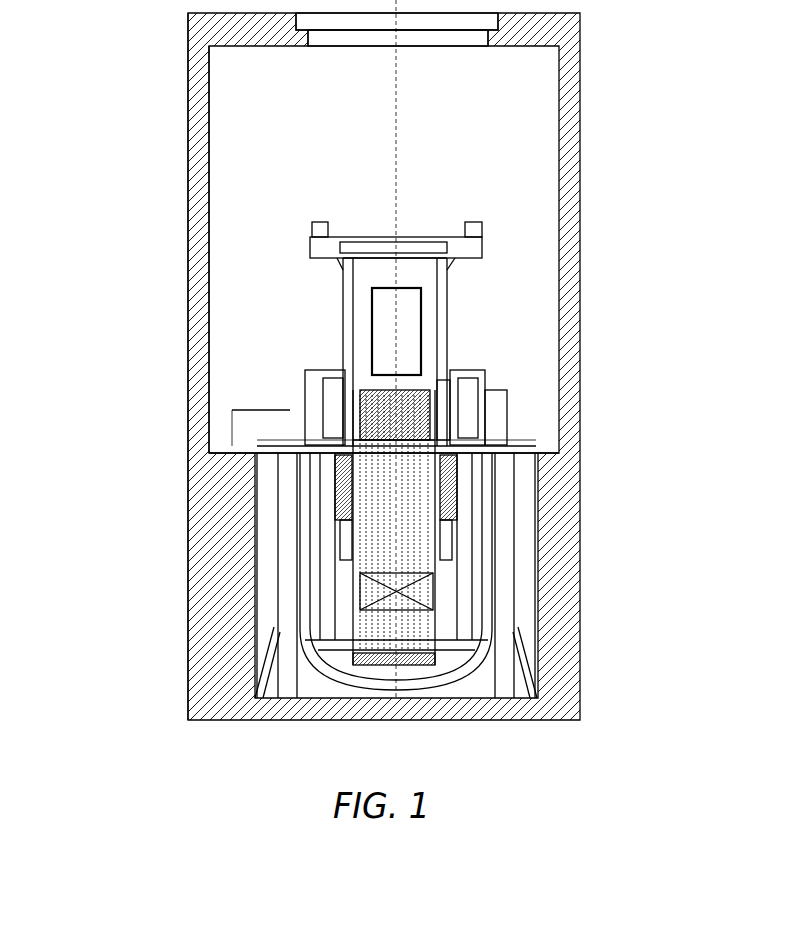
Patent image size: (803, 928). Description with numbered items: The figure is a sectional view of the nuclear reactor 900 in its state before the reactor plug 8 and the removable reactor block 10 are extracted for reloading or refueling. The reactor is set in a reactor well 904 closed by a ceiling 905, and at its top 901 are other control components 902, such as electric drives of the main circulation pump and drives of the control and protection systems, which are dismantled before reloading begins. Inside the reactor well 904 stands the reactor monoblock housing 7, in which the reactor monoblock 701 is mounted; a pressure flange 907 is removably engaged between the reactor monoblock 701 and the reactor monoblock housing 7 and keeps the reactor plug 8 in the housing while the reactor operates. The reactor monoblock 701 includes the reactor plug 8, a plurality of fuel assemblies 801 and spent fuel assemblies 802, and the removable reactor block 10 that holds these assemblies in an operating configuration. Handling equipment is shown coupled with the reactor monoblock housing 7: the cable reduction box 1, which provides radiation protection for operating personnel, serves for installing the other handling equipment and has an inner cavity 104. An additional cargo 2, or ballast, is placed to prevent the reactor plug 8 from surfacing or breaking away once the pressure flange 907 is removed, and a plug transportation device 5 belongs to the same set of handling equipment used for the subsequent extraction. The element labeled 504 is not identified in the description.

The nuclear reactor 900 is at (200, 27).
The ceiling 905 is at (272, 50).
The reactor well 904 is at (200, 232).
The top 901 is at (262, 440).
The pressure flange 907 is at (297, 433).
The cable reduction box 1 is at (343, 337).
The inner cavity 104 is at (367, 267).
The additional cargo 2 is at (398, 288).
The control components 902 is at (300, 377).
The steam generator 504 is at (428, 377).
The plug transportation device 5 is at (452, 385).
The reactor plug 8 is at (413, 487).
The reactor monoblock housing 7 is at (487, 440).
The spent fuel assemblies 802 is at (423, 511).
The fuel assemblies 801 is at (435, 533).
The reactor monoblock 701 is at (438, 592).
The removable reactor block 10 is at (413, 632).